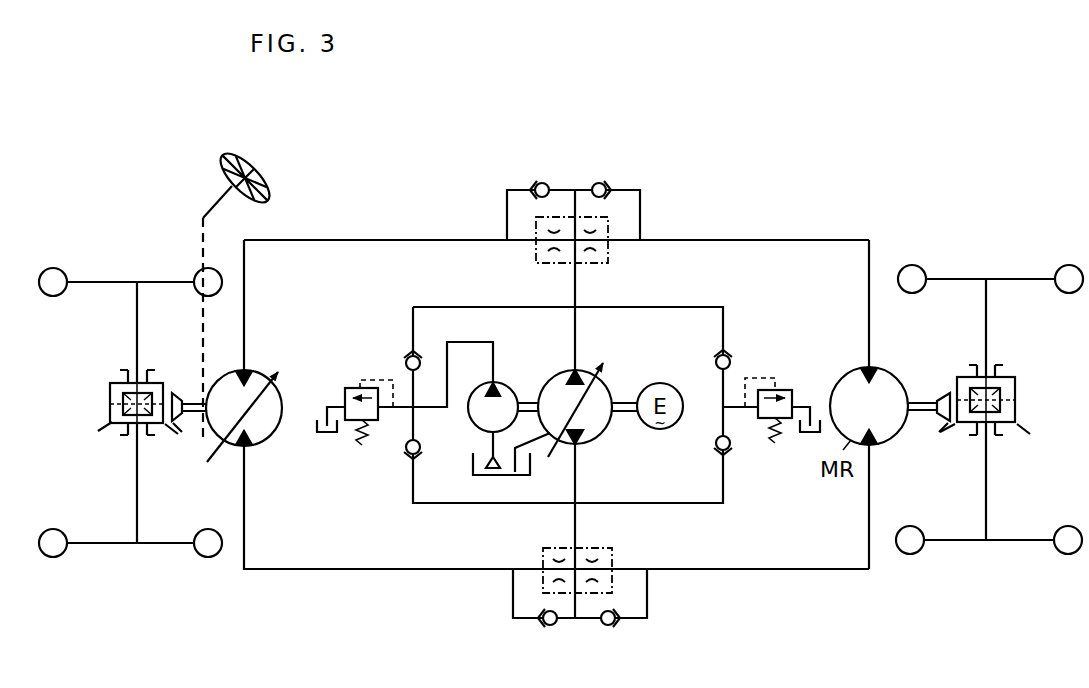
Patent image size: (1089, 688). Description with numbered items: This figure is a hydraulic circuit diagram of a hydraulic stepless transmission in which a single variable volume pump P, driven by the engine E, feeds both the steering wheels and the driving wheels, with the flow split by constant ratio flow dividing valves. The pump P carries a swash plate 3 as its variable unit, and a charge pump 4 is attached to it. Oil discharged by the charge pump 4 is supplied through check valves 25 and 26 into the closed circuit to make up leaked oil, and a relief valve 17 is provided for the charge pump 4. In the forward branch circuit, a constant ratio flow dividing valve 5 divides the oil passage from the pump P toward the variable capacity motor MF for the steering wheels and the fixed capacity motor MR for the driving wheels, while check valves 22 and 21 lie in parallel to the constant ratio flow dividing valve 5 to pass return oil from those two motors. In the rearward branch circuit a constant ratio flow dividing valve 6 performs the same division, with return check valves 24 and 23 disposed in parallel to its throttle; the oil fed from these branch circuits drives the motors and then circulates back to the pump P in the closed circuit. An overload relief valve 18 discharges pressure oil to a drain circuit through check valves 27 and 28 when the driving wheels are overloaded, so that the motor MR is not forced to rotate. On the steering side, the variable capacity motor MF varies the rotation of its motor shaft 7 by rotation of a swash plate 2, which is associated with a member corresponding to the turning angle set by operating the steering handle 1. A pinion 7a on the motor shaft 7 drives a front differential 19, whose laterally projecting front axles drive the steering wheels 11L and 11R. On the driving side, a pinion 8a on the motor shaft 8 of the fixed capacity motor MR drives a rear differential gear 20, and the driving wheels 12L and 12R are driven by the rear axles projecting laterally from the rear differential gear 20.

The steering handle 1 is at (250, 288).
The swash plate 2 is at (277, 374).
The swash plate 3 is at (552, 447).
The charge pump 4 is at (506, 385).
The constant ratio flow dividing valve 5 is at (609, 259).
The constant ratio flow dividing valve 6 is at (612, 552).
The motor shaft 7 is at (186, 411).
The pinion 7a is at (173, 394).
The motor shaft 8 is at (931, 402).
The pinion 8a is at (941, 395).
The steering wheel 11R is at (105, 280).
The steering wheel 11L is at (107, 546).
The driving wheel 12R is at (960, 277).
The driving wheel 12L is at (962, 543).
The relief valve 17 is at (352, 388).
The overload relief valve 18 is at (781, 390).
The front differential 19 is at (107, 402).
The rear differential gear 20 is at (1019, 397).
The check valve 21 is at (600, 182).
The check valve 22 is at (543, 182).
The return check valve 23 is at (605, 626).
The return check valve 24 is at (554, 626).
The check valve 25 is at (406, 356).
The check valve 26 is at (408, 457).
The check valve 27 is at (731, 358).
The check valve 28 is at (731, 450).